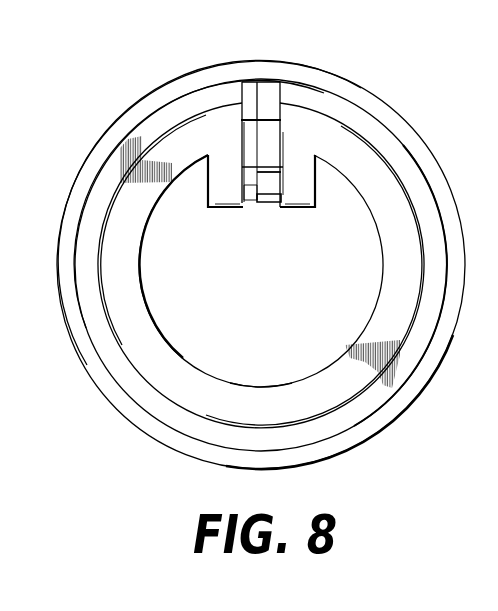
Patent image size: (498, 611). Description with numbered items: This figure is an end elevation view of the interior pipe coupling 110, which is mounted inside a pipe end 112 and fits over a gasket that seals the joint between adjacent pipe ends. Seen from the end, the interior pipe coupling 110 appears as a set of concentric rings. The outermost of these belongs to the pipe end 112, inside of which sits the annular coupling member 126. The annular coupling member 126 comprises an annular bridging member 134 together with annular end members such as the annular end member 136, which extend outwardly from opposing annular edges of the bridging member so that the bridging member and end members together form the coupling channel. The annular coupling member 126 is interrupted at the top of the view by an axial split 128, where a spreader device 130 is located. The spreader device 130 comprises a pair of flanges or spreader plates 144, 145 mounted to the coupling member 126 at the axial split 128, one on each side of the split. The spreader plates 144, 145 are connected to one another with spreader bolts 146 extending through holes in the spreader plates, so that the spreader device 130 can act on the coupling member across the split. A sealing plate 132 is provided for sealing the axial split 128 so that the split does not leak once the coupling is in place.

The interior pipe coupling 110 is at (168, 336).
The pipe end 112 is at (70, 192).
The annular coupling member 126 is at (258, 378).
The axial split 128 is at (265, 218).
The spreader device 130 is at (313, 214).
The sealing plate 132 is at (268, 100).
The annular bridging member 134 is at (122, 273).
The annular end member 136 is at (173, 115).
The spreader plate 144 is at (206, 209).
The spreader plate 145 is at (297, 193).
The spreader bolts 146 is at (257, 100).